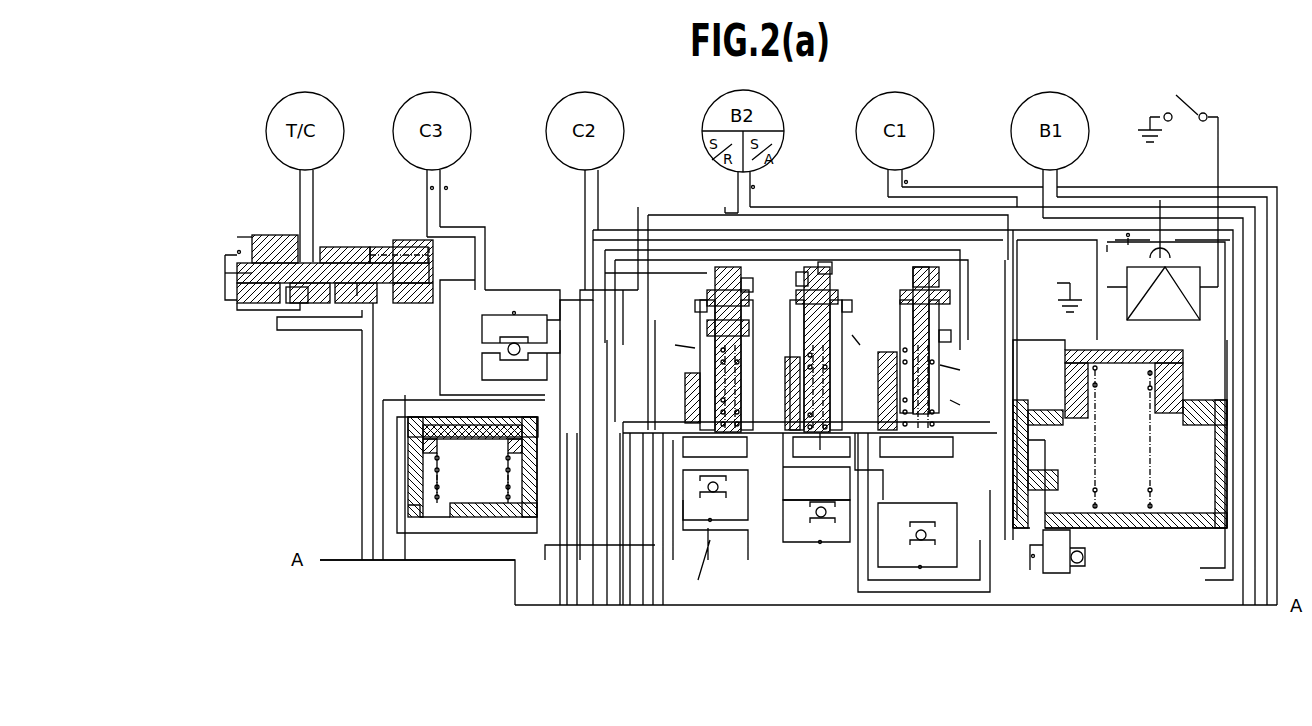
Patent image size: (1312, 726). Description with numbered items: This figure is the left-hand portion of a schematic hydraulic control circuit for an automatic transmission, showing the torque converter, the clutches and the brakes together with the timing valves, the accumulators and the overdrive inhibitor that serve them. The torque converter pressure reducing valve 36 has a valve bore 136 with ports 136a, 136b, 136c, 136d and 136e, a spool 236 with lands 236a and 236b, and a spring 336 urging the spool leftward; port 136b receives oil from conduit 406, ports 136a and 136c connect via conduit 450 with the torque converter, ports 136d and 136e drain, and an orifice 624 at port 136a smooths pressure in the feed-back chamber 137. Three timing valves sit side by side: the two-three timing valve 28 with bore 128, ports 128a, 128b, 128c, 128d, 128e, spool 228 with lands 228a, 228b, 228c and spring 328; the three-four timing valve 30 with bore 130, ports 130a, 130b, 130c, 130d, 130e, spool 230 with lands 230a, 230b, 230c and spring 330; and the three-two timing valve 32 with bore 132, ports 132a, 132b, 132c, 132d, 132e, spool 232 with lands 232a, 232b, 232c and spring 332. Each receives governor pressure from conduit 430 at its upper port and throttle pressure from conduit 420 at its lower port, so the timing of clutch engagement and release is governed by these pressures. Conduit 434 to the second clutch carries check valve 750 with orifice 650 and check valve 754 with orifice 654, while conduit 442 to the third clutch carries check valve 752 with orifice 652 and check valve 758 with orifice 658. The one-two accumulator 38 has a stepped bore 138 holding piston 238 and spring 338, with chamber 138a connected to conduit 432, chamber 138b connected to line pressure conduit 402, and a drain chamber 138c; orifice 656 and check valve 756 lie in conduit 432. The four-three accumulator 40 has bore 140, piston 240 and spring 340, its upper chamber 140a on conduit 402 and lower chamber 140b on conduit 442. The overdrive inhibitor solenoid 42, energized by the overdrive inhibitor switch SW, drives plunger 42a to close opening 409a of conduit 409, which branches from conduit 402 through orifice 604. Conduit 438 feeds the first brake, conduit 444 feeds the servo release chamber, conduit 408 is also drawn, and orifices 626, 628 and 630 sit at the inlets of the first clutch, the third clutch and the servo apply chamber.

The 2-3 timing valve 28 is at (920, 455).
The 3-4 timing valve 30 is at (870, 294).
The 3-2 timing valve 32 is at (776, 294).
The torque converter pressure reducing valve 36 is at (387, 215).
The 1-2 accumulator 38 is at (1032, 356).
The 4-3 accumulator 40 is at (425, 382).
The overdrive inhibitor solenoid 42 is at (1196, 337).
The plunger 42a is at (1195, 257).
The valve bore 128 is at (938, 418).
The port 128a is at (950, 274).
The drain port 128b is at (950, 303).
The port 128c is at (951, 336).
The port 128d is at (960, 375).
The port 128e is at (960, 408).
The valve bore 130 is at (836, 437).
The port 130a is at (840, 270).
The drain port 130b is at (840, 298).
The port 130c is at (844, 310).
The port 130d is at (863, 334).
The port 130e is at (884, 466).
The valve bore 132 is at (700, 405).
The port 132a is at (752, 290).
The drain port 132b is at (700, 310).
The port 132c is at (675, 335).
The port 132d is at (748, 385).
The port 132e is at (845, 500).
The valve bore 136 is at (399, 246).
The port 136a is at (240, 296).
The port 136b is at (262, 306).
The port 136c is at (296, 305).
The drain port 136d is at (355, 300).
The drain port 136e is at (415, 296).
The feed-back chamber 137 is at (214, 277).
The stepped cylindrical bore 138 is at (1203, 388).
The chamber 138a is at (1125, 512).
The chamber 138b is at (1117, 348).
The intermediate chamber 138c is at (1150, 420).
The cylindrical bore 140 is at (525, 438).
The upper side chamber 140a is at (475, 412).
The lower side chamber 140b is at (468, 525).
The spool 228 is at (910, 364).
The land 228a is at (932, 290).
The land 228b is at (932, 320).
The land 228c is at (932, 395).
The spool 230 is at (820, 265).
The land 230a is at (805, 265).
The land 230b is at (790, 330).
The land 230c is at (790, 440).
The spool 232 is at (725, 265).
The land 232a is at (707, 295).
The land 232b is at (707, 325).
The land 232c is at (715, 447).
The spool 236 is at (350, 262).
The land 236a is at (258, 242).
The land 236b is at (328, 250).
The piston 238 is at (1048, 460).
The piston 240 is at (505, 462).
The spring 328 is at (952, 356).
The spring 330 is at (821, 401).
The spring 332 is at (690, 380).
The spring 336 is at (376, 302).
The spring 338 is at (1150, 470).
The spring 340 is at (505, 480).
The conduit 402 is at (393, 398).
The conduit 406 is at (362, 366).
The conduit 408 is at (986, 182).
The conduit 409 is at (1240, 212).
The opening 409a is at (1167, 214).
The conduit 420 is at (1060, 404).
The conduit 430 is at (620, 320).
The conduit 432 is at (1020, 594).
The conduit 434 is at (600, 190).
The conduit 438 is at (1060, 180).
The conduit 442 is at (442, 211).
The conduit 444 is at (724, 185).
The conduit 450 is at (316, 190).
The orifice 604 is at (1117, 251).
The orifice 624 is at (237, 251).
The orifice 626 is at (908, 182).
The orifice 628 is at (447, 187).
The orifice 630 is at (756, 186).
The orifice 650 is at (920, 547).
The orifice 652 is at (816, 522).
The orifice 654 is at (705, 519).
The orifice 656 is at (1028, 556).
The orifice 658 is at (524, 310).
The check valve 750 is at (930, 520).
The check valve 752 is at (830, 492).
The check valve 754 is at (712, 496).
The check valve 756 is at (1085, 558).
The check valve 758 is at (522, 354).
The overdrive inhibitor switch SW is at (1178, 191).